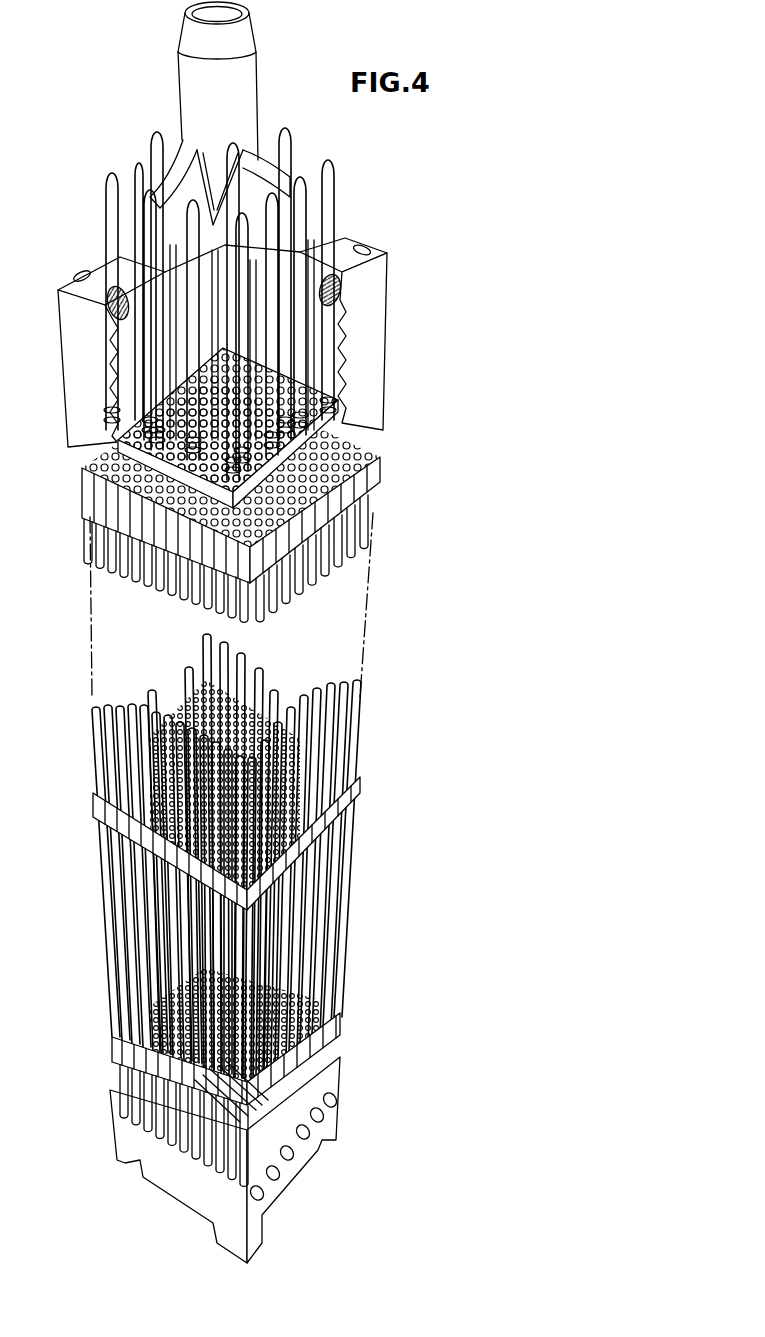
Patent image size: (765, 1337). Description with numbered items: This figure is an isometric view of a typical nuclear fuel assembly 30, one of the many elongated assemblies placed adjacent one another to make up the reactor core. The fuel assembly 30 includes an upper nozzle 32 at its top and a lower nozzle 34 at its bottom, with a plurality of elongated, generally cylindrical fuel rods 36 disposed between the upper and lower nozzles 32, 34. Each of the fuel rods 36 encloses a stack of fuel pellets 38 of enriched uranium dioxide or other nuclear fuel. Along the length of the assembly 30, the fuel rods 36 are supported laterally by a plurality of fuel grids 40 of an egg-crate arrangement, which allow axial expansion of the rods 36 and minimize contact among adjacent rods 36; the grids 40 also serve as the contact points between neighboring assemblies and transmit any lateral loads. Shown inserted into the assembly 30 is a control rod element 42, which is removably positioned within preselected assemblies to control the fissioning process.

The fuel assembly 30 is at (434, 581).
The upper nozzle 32 is at (373, 349).
The lower nozzle 34 is at (333, 1081).
The fuel rods 36 is at (353, 526).
The fuel pellets 38 is at (117, 967).
The fuel grids 40 is at (102, 812).
The control rod element 42 is at (240, 40).